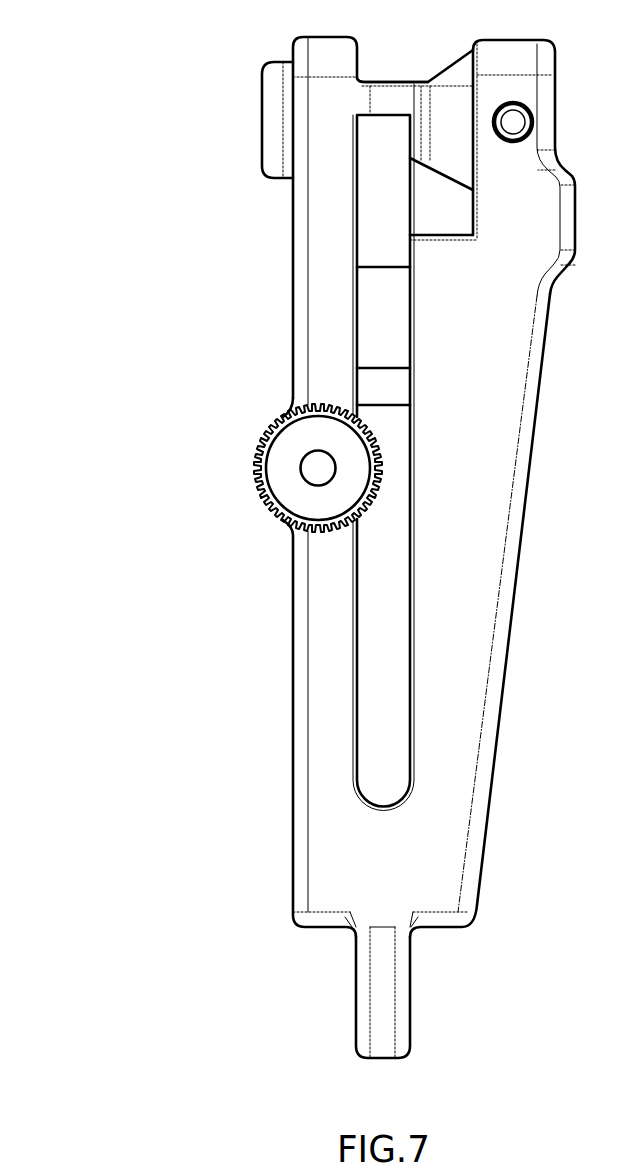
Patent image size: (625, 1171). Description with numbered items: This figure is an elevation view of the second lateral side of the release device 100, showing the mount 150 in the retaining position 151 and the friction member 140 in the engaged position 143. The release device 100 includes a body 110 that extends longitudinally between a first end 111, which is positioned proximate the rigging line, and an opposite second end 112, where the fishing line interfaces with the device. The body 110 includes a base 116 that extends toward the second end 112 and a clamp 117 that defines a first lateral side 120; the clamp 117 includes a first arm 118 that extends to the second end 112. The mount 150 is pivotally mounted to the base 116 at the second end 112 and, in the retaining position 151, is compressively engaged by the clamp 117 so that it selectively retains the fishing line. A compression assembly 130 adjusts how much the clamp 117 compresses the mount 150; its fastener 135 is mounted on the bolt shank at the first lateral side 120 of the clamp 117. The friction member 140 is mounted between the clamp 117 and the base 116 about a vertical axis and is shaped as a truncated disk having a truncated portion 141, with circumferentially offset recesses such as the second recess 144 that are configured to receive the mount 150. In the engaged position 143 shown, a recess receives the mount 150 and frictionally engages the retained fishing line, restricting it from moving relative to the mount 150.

The release device 100 is at (102, 1079).
The body 110 is at (209, 874).
The first end 111 is at (398, 1059).
The second end 112 is at (508, 38).
The base 116 is at (488, 760).
The clamp 117 is at (293, 796).
The first arm 118 is at (293, 236).
The first lateral side 120 is at (330, 322).
The compression assembly 130 is at (375, 508).
The fastener 135 is at (290, 495).
The friction member 140 is at (394, 248).
The truncated portion 141 is at (395, 408).
The engaged position 143 is at (424, 204).
The second recess 144 is at (395, 366).
The mount 150 is at (408, 56).
The retaining position 151 is at (376, 41).